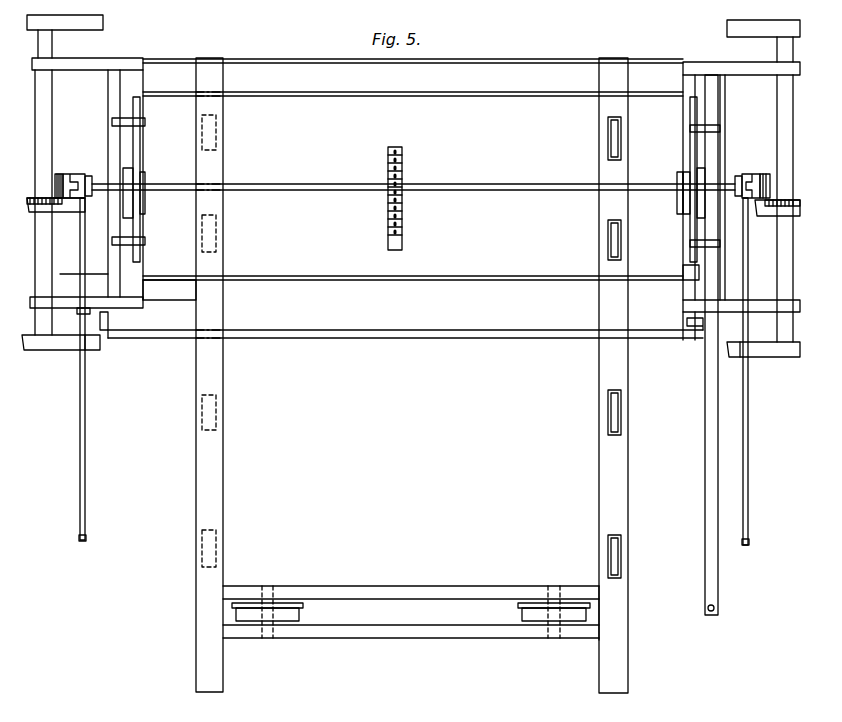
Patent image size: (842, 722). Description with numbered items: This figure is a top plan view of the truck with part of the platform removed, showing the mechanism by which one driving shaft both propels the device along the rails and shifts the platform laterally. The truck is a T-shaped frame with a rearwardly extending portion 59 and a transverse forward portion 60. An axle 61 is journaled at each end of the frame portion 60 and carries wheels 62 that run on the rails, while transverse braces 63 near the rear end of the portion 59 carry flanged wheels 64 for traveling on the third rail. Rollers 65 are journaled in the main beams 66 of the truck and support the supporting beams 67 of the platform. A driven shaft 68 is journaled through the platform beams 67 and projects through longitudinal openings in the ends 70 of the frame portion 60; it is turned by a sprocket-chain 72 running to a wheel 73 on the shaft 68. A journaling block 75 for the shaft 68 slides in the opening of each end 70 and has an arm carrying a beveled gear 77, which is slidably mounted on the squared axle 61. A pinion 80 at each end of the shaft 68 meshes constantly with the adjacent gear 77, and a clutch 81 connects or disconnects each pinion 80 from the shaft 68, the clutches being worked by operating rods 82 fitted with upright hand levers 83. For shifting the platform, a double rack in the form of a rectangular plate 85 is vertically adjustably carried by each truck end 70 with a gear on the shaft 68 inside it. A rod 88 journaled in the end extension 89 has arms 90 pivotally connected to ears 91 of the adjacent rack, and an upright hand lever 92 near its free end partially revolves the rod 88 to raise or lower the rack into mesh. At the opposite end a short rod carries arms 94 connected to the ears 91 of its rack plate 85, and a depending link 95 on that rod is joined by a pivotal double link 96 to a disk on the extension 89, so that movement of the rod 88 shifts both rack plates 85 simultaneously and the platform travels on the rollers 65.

The rearwardly extending portion 59 is at (599, 586).
The transverse forward portion 60 is at (600, 96).
The axle 61 is at (772, 122).
The wheels 62 is at (766, 30).
The transverse braces 63 is at (411, 590).
The flanged wheels 64 is at (292, 622).
The rollers 65 is at (608, 138).
The main beams 66 is at (628, 505).
The supporting beams 67 is at (196, 482).
The driven shaft 68 is at (478, 184).
The ends 70 is at (146, 289).
The sprocket-chain 72 is at (388, 242).
The wheel 73 is at (395, 147).
The journaling block 75 is at (680, 210).
The beveled gear 77 is at (66, 212).
The pinion 80 is at (60, 174).
The clutch 81 is at (88, 176).
The operating rods 82 is at (80, 450).
The hand levers 83 is at (79, 538).
The rectangular plate 85 is at (133, 110).
The rod 88 is at (705, 548).
The end extension 89 is at (82, 58).
The arms 90 is at (690, 128).
The ears 91 is at (145, 243).
The hand lever 92 is at (716, 608).
The arms 94 is at (128, 236).
The depending link 95 is at (108, 273).
The double link 96 is at (420, 339).